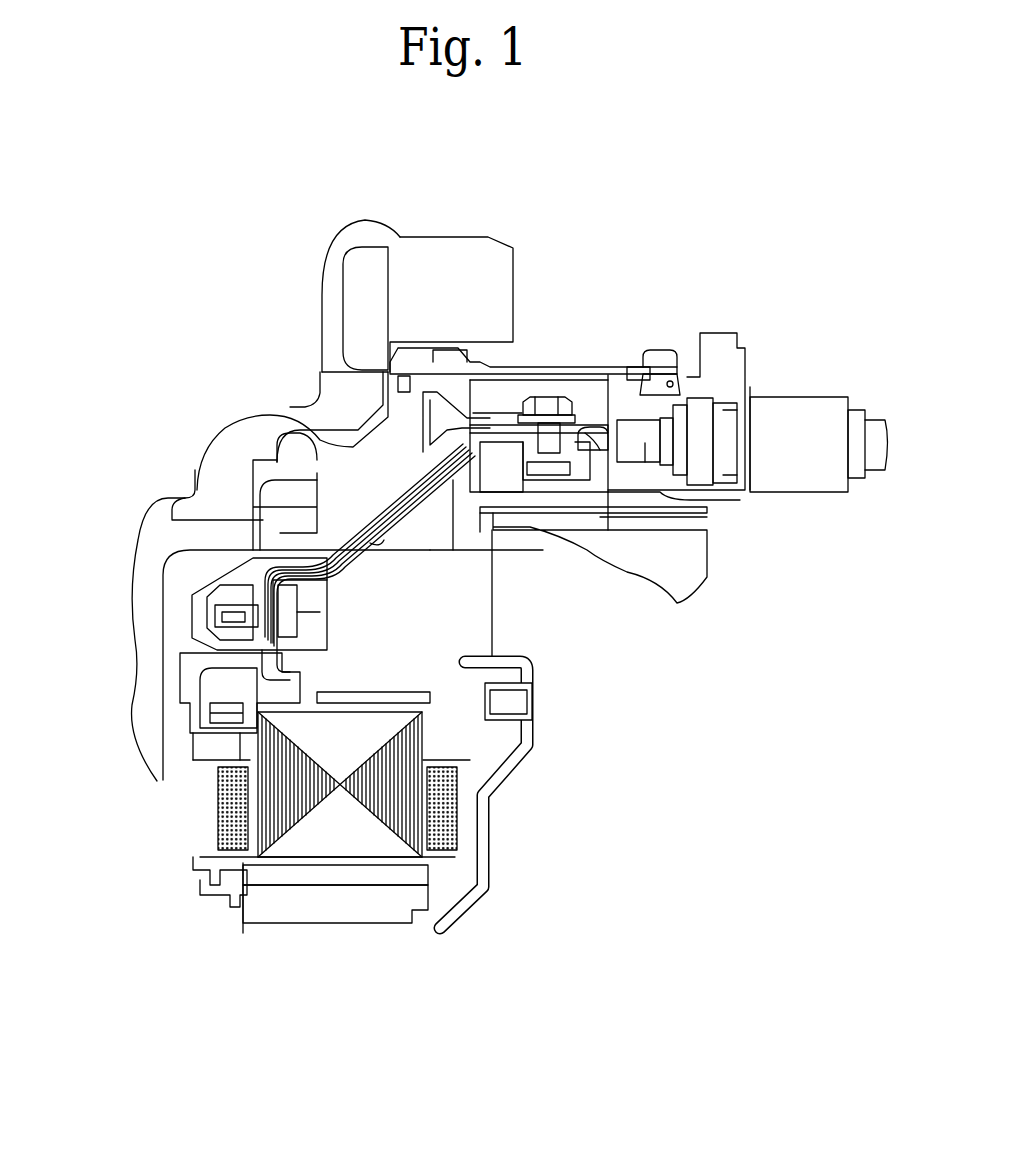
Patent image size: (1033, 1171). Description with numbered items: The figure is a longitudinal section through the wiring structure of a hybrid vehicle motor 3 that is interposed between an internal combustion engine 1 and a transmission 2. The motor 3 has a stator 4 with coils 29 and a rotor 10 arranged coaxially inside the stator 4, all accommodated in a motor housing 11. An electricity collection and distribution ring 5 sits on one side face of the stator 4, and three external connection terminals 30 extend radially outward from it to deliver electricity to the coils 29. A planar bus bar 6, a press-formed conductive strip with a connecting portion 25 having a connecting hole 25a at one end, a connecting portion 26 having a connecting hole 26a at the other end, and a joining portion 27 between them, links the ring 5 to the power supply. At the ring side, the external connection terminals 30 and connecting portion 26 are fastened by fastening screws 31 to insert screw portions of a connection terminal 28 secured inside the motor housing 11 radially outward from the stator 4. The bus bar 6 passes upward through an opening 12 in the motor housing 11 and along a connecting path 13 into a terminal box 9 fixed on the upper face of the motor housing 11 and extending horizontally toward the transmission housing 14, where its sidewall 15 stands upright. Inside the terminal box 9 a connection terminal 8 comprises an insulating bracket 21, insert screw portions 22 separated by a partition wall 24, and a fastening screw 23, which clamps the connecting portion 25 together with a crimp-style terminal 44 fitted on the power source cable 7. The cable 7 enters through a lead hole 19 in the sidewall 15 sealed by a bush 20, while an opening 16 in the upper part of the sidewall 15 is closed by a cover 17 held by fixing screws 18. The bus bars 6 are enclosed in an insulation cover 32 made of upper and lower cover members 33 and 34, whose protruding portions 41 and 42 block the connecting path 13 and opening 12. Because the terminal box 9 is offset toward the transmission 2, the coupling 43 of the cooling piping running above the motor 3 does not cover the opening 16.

The internal combustion engine 1 is at (125, 458).
The transmission 2 is at (728, 588).
The hybrid vehicle motor 3 is at (152, 920).
The stator 4 is at (398, 678).
The electricity collection and distribution ring 5 is at (183, 742).
The bus bar 6 is at (452, 440).
The power source cable 7 is at (873, 462).
The connection terminal 8 is at (562, 398).
The terminal box 9 is at (723, 342).
The rotor 10 is at (373, 907).
The motor housing 11 is at (263, 532).
The opening 12 is at (458, 556).
The connecting path 13 is at (323, 550).
The transmission housing 14 is at (627, 575).
The sidewall 15 is at (662, 378).
The opening 16 is at (450, 372).
The cover 17 is at (608, 400).
The fixing screws 18 is at (652, 350).
The lead hole 19 is at (707, 410).
The bush 20 is at (740, 430).
The bracket 21 is at (575, 482).
The insert screw portion 22 is at (540, 470).
The fastening screw 23 is at (551, 400).
The partition wall 24 is at (530, 392).
The connecting portion 25 is at (603, 528).
The connecting hole 25a is at (630, 367).
The connecting portion 26 is at (272, 652).
The connecting hole 26a is at (300, 635).
The joining portion 27 is at (352, 565).
The connection terminal 28 is at (185, 581).
The coils 29 is at (227, 797).
The external connection terminals 30 is at (268, 687).
The fastening screws 31 is at (292, 593).
The insulation cover 32 is at (382, 412).
The upper cover member 33 is at (360, 540).
The lower cover member 34 is at (437, 522).
The protruding portion 41 is at (415, 429).
The protruding portion 42 is at (474, 487).
The coupling of the cooling piping 43 is at (447, 253).
The crimp-style terminal 44 is at (673, 497).